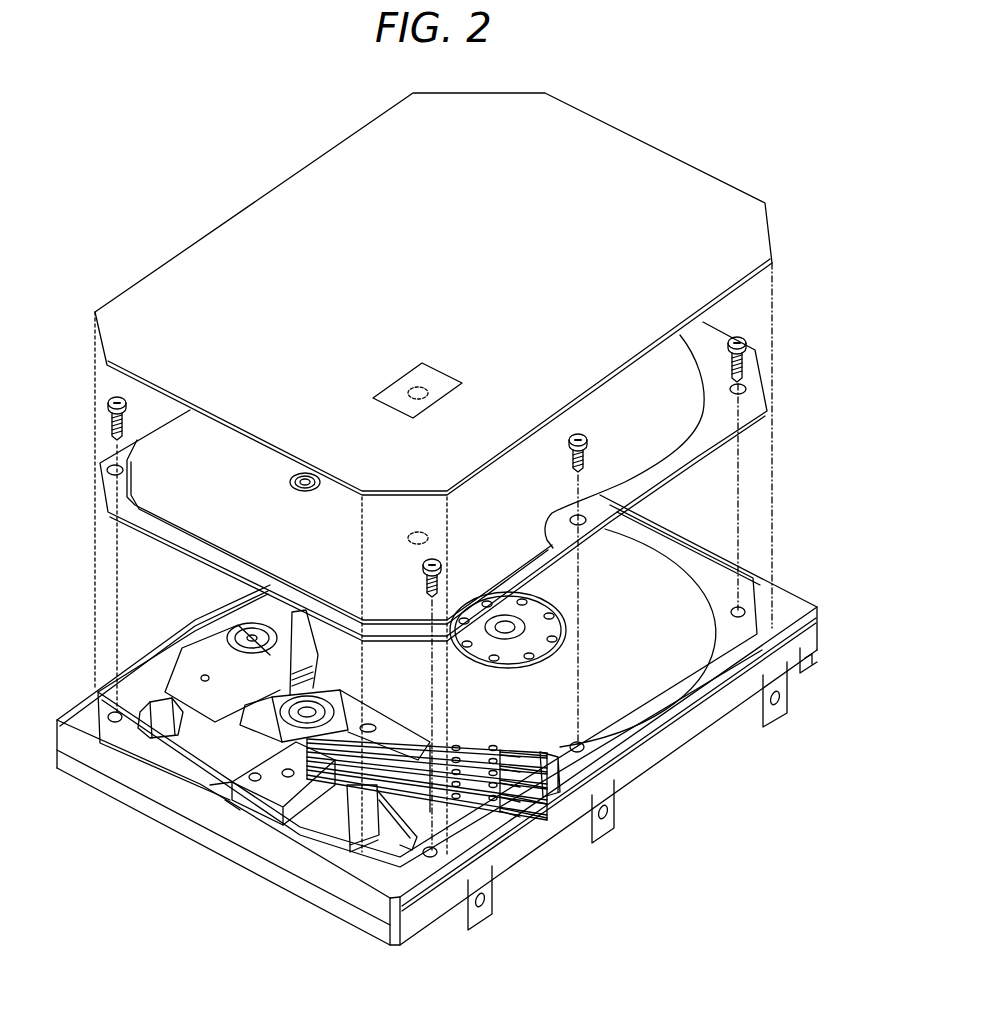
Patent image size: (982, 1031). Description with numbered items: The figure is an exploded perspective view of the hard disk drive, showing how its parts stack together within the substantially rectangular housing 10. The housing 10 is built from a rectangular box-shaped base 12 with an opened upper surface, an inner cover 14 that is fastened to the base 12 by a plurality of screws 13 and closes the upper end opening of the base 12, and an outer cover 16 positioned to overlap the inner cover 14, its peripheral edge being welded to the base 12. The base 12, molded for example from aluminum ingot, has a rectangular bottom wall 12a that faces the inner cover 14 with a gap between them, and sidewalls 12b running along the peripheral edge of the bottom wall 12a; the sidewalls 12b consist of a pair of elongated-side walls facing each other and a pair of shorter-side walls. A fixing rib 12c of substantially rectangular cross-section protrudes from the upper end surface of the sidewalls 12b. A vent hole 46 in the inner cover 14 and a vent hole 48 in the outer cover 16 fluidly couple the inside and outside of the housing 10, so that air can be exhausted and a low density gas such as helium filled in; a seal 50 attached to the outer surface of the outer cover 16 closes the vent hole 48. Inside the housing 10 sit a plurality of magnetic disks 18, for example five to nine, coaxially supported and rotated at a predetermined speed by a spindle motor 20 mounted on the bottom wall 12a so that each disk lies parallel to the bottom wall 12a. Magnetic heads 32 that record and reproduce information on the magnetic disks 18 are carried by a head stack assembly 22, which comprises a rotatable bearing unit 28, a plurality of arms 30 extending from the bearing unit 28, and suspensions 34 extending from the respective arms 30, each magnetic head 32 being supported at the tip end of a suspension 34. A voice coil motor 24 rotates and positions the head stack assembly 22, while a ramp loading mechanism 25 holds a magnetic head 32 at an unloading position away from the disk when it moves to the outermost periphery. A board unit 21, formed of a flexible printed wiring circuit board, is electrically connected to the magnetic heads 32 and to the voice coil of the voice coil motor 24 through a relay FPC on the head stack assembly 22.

The housing 10 is at (135, 218).
The base 12 is at (645, 793).
The bottom wall 12a is at (505, 830).
The sidewalls 12b is at (570, 848).
The fixing rib 12c is at (175, 652).
The screws 13 is at (110, 398).
The inner cover 14 is at (663, 435).
The outer cover 16 is at (592, 140).
The magnetic disks 18 is at (655, 690).
The spindle motor 20 is at (547, 612).
The board unit 21 is at (378, 833).
The head stack assembly 22 is at (393, 712).
The voice coil motor 24 is at (215, 742).
The ramp loading mechanism 25 is at (558, 735).
The bearing unit 28 is at (305, 698).
The arms 30 is at (427, 735).
The magnetic heads 32 is at (533, 758).
The suspensions 34 is at (503, 755).
The vent hole 46 is at (410, 545).
The vent hole 48 is at (421, 405).
The seal 50 is at (437, 378).